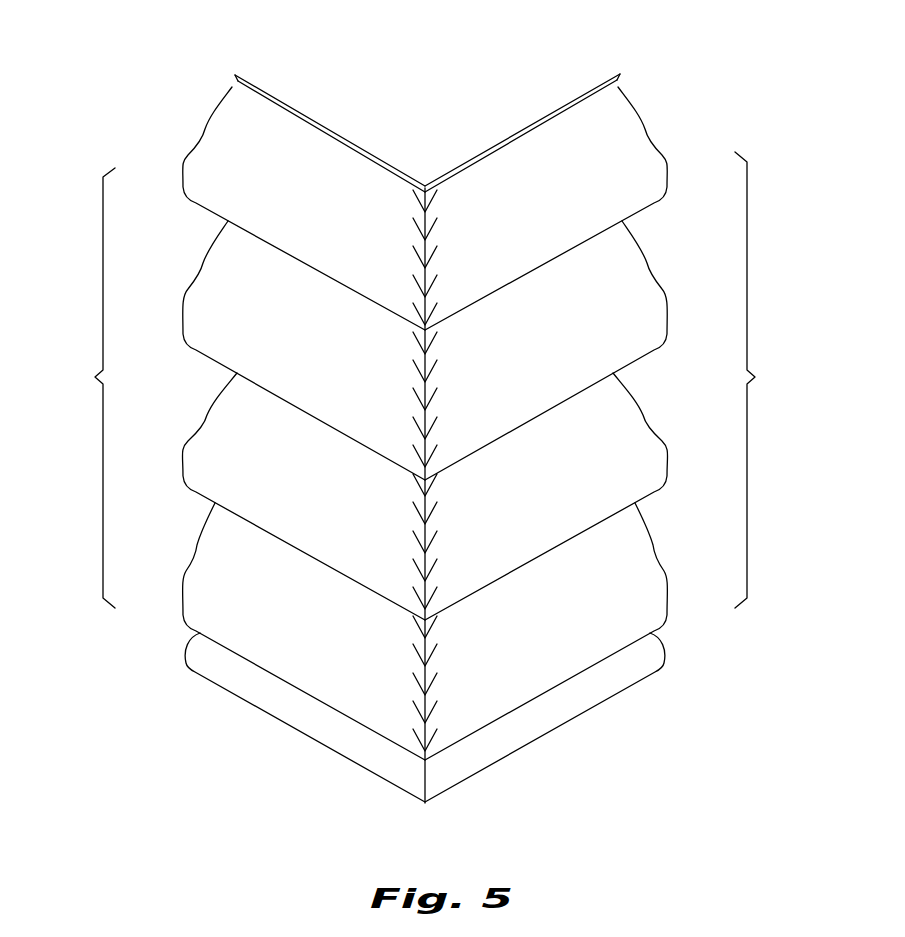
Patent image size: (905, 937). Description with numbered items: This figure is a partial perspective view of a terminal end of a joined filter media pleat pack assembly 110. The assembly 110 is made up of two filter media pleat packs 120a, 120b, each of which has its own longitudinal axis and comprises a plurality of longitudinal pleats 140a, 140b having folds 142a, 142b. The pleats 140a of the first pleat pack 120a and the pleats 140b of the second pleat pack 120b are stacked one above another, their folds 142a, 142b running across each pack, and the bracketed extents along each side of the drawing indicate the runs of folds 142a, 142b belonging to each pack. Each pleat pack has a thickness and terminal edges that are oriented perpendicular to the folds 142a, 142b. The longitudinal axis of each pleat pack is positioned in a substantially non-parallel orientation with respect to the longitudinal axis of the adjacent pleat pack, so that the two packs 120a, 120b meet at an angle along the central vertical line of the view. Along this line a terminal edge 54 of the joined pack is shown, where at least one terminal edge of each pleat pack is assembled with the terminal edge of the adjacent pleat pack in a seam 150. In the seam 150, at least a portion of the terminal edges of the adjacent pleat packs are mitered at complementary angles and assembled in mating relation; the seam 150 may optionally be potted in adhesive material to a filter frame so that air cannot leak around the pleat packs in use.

The joined filter media pleat pack assembly 110 is at (668, 55).
The filter media pleat pack 120a is at (230, 122).
The filter media pleat pack 120b is at (632, 131).
The longitudinal pleats 140a is at (233, 207).
The longitudinal pleats 140b is at (625, 203).
The folds 142a is at (72, 388).
The folds 142b is at (780, 380).
The terminal edge 54 is at (418, 671).
The seam 150 is at (425, 783).